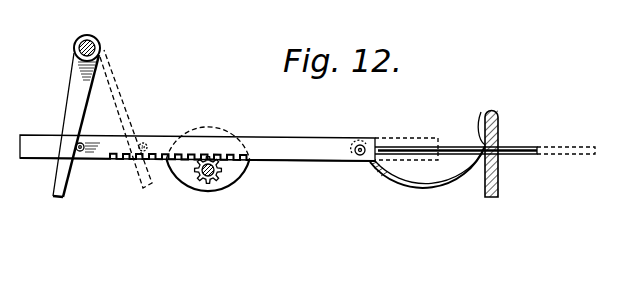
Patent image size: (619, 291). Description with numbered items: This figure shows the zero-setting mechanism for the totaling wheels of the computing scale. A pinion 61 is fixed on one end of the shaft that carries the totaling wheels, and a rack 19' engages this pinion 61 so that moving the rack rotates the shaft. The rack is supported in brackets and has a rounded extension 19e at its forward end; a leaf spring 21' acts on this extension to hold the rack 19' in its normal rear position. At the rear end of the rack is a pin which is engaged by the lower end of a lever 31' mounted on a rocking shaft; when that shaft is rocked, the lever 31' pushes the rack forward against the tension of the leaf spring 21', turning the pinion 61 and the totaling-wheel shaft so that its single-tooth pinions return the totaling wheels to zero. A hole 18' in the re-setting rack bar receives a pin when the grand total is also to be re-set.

The rack 19' is at (229, 139).
The rod extension 19e is at (521, 146).
The lever 31' is at (93, 114).
The hole 18' is at (89, 166).
The pinion 61 is at (222, 175).
The leaf spring 21' is at (434, 157).